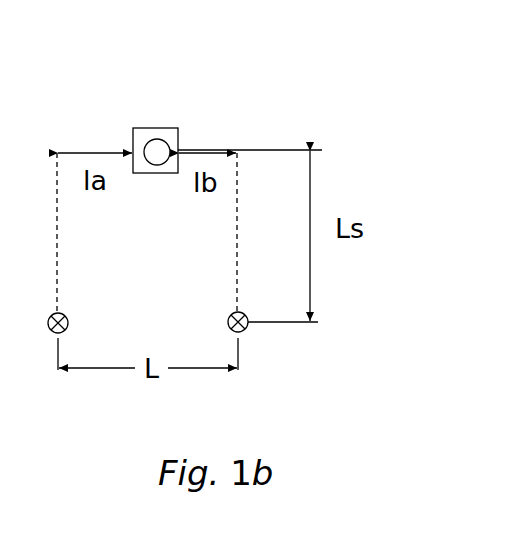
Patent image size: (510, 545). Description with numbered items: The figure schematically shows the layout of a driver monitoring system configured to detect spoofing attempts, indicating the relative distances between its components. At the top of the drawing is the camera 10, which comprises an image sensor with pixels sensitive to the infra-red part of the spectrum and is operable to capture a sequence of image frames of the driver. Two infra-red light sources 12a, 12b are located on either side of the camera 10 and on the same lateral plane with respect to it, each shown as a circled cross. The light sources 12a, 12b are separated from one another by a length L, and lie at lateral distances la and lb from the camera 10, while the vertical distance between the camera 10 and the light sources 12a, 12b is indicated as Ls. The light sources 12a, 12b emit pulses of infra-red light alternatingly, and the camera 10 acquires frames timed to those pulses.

The camera 10 is at (163, 141).
The first light source 12a is at (68, 320).
The second light source 12b is at (228, 322).